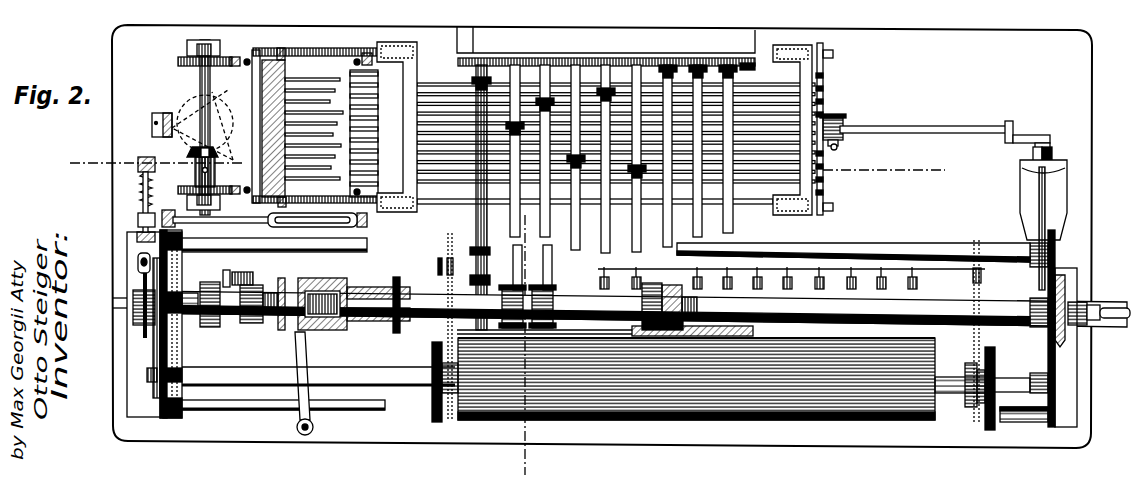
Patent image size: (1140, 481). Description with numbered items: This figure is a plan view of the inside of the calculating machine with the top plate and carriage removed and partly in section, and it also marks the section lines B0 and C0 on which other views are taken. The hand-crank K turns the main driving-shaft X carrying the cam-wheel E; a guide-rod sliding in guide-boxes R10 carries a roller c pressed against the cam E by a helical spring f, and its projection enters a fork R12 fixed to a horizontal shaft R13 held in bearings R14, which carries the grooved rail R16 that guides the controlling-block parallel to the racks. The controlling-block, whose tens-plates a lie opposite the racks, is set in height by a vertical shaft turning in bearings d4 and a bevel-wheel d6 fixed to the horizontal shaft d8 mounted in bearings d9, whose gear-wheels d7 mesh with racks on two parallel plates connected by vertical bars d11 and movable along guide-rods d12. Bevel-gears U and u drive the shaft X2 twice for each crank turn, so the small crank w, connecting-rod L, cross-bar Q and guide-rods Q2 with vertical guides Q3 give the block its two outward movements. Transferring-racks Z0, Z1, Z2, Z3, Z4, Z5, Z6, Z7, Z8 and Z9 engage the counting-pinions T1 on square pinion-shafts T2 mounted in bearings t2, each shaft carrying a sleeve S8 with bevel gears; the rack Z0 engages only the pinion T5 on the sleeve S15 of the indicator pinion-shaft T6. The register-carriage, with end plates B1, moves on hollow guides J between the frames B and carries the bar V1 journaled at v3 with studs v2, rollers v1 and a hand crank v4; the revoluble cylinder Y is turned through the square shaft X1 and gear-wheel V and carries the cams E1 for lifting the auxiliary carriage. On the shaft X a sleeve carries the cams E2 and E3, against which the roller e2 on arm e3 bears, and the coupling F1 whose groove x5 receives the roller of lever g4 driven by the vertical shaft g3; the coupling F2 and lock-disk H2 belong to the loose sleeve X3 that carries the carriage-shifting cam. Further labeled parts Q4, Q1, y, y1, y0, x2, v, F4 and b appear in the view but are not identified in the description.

The bearings d9 is at (208, 41).
The gear-wheels d7 is at (178, 62).
The horizontal shaft d8 is at (195, 127).
The bearings d4 is at (152, 123).
The bevel-wheel d6 is at (190, 152).
The post Q4 is at (254, 55).
The vertical guides Q3 is at (284, 53).
The vertical bars d11 is at (366, 53).
The guide-rods d12 is at (343, 128).
The comb strips b is at (328, 141).
The tens-plates a is at (292, 112).
The bracket Q1 is at (410, 45).
The levers y1 is at (395, 103).
The lever y is at (412, 68).
The guide-rods Q2 is at (573, 58).
The pinion-shaft T2 is at (518, 75).
The counting-pinions T1 is at (696, 62).
The indicator pinion-shaft T6 is at (482, 65).
The pinion T5 is at (491, 82).
The bearings t2 is at (616, 65).
The lever y0 is at (757, 65).
The sleeve S15 is at (476, 222).
The section line C0 C0 is at (536, 345).
The cross-bar Q is at (830, 46).
The transferring-rack Z0 is at (823, 74).
The transferring-rack Z1 is at (823, 88).
The transferring-rack Z2 is at (823, 101).
The transferring-rack Z3 is at (823, 114).
The transferring-rack Z4 is at (843, 135).
The transferring-rack Z5 is at (838, 147).
The transferring-rack Z6 is at (823, 153).
The transferring-rack Z7 is at (823, 166).
The transferring-rack Z8 is at (823, 179).
The transferring-rack Z9 is at (823, 192).
The connecting-rod L is at (950, 133).
The small crank w is at (1023, 141).
The bushing x2 is at (1054, 160).
The shaft X2 is at (1043, 225).
The section line B0 B0 is at (512, 167).
The hollow guides J is at (1006, 428).
The cam-wheel E is at (113, 320).
The gear-wheel V is at (147, 324).
The frames B is at (165, 339).
The roller c is at (138, 268).
The guide-boxes R10 is at (138, 165).
The helical spring f is at (140, 194).
The fork R12 is at (138, 221).
The bearings R14 is at (275, 212).
The horizontal shaft R13 is at (240, 224).
The grooved rail R16 is at (295, 227).
The main driving-shaft X is at (188, 300).
The cam-wheel E3 is at (210, 328).
The arm e3 is at (224, 276).
The roller e2 is at (250, 272).
The cam-wheel E2 is at (258, 326).
The groove x5 is at (292, 283).
The coupling F1 is at (336, 283).
The coupling F2 is at (385, 298).
The lock-disk H2 is at (396, 284).
The lever g4 is at (305, 338).
The vertical shaft g3 is at (296, 428).
The square shaft X1 is at (318, 368).
The end plates B1 is at (998, 337).
The block v is at (152, 383).
The small crank v4 is at (437, 268).
The journal v3 is at (990, 275).
The sleeve S8 is at (556, 293).
The gear F4 is at (648, 283).
The bar V1 is at (580, 283).
The rollers v1 is at (753, 284).
The studs v2 is at (607, 278).
The bevel-gear u is at (1007, 290).
The revoluble cylinder Y is at (840, 348).
The cam-wheels E1 is at (432, 350).
The sleeve X3 is at (444, 326).
The bevel-gear U is at (1067, 292).
The hand-crank K is at (1112, 320).